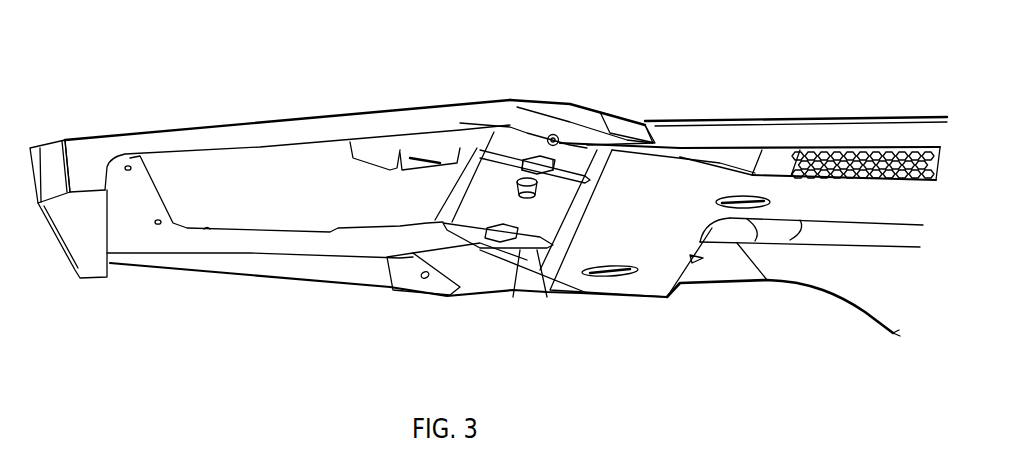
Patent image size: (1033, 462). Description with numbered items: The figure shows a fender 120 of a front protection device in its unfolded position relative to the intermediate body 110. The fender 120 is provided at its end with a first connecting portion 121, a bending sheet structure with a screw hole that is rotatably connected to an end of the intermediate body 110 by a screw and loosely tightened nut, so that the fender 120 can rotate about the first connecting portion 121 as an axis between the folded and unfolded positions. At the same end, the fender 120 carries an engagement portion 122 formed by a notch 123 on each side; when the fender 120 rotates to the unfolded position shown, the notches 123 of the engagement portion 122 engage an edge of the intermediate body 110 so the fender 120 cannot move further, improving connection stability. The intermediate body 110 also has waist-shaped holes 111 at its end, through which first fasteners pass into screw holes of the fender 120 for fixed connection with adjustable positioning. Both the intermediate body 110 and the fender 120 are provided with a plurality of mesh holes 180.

The intermediate body 110 is at (878, 128).
The waist-shaped hole 111 is at (743, 199).
The fender 120 is at (143, 253).
The first connecting portion 121 is at (550, 120).
The engagement portion 122 is at (630, 120).
The notch 123 is at (630, 125).
The mesh hole 180 is at (830, 150).